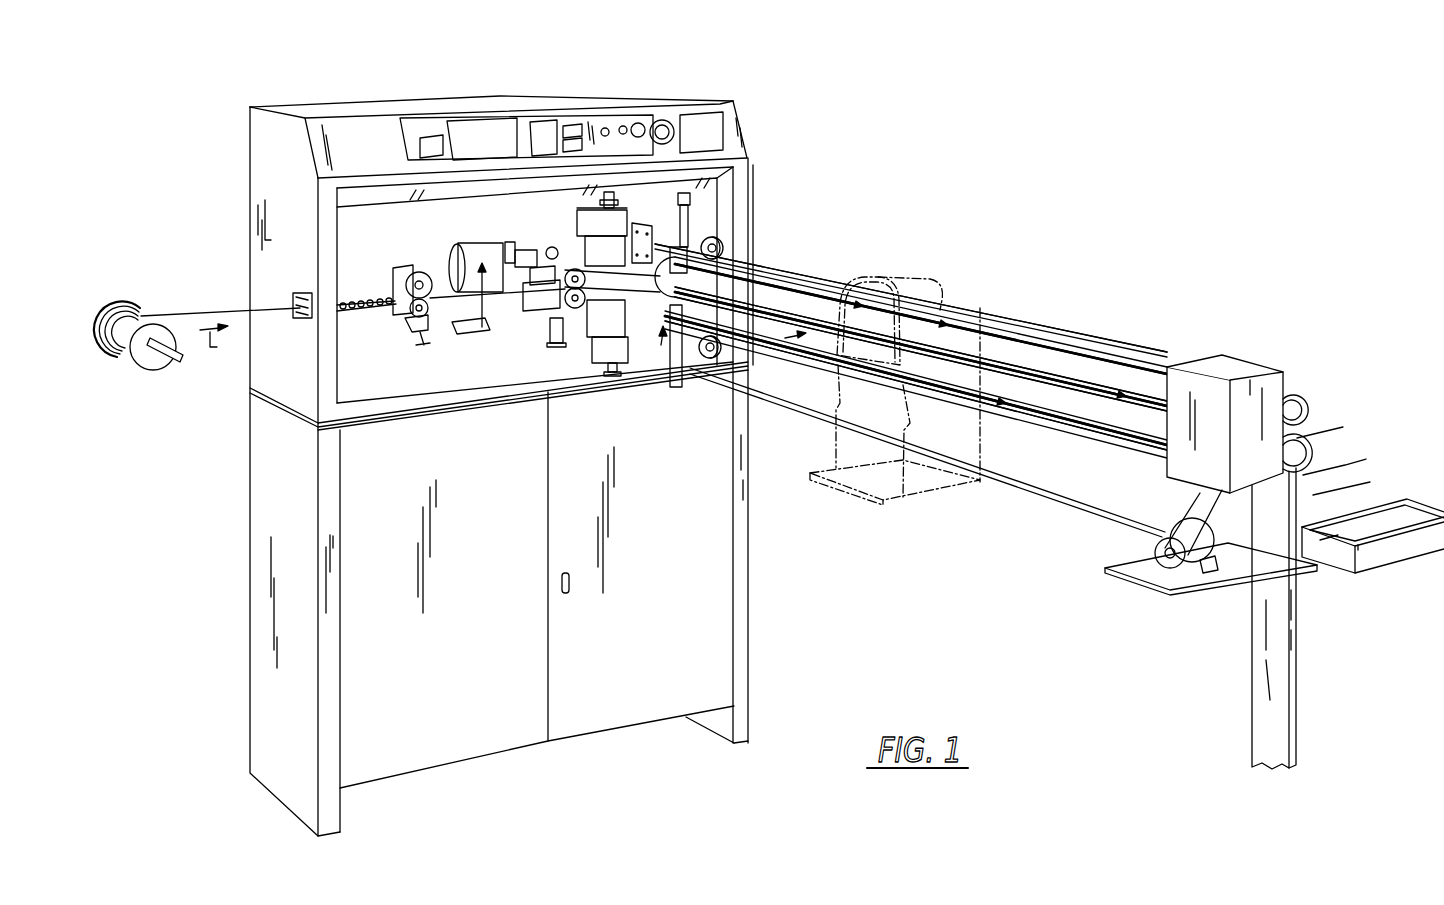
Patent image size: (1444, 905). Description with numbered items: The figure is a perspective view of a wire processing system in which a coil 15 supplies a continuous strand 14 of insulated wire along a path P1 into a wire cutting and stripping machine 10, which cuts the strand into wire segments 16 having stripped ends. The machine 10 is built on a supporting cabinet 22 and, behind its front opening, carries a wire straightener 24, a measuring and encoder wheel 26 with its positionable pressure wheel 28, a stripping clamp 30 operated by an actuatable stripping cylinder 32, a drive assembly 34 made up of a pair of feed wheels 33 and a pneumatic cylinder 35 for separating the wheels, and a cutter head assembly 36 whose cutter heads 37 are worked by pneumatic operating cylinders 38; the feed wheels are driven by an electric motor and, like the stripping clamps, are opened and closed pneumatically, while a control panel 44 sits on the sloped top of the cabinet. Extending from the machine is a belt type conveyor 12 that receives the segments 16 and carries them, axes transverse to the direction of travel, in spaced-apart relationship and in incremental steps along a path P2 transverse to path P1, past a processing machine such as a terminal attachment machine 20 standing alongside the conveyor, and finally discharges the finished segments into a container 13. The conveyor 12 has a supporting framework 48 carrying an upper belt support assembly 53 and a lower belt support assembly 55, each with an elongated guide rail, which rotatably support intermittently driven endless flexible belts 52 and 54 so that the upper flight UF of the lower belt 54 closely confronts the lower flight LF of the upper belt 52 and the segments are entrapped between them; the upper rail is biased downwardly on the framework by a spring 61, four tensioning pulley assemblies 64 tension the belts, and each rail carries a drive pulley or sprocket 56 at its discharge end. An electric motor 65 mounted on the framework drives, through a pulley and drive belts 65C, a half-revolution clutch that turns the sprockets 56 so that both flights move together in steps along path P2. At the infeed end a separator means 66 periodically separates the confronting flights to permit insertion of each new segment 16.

The wire cutting and stripping machine 10 is at (248, 224).
The belt type conveyor 12 is at (827, 278).
The container 13 is at (1382, 558).
The continuous strand of insulated wire 14 is at (220, 313).
The coil 15 is at (145, 370).
The wire segments 16 is at (762, 310).
The terminal attachment machine 20 is at (956, 294).
The supporting cabinet 22 is at (265, 240).
The wire straightener 24 is at (362, 299).
The measuring and encoder wheel 26 is at (410, 267).
The positionable pressure wheel 28 is at (412, 316).
The stripping clamp 30 is at (537, 315).
The actuatable stripping cylinder 32 is at (478, 245).
The feed wheels 33 is at (607, 313).
The drive assembly 34 is at (568, 262).
The pneumatic cylinder 35 is at (550, 337).
The cutter head assembly 36 is at (605, 330).
The cutter heads 37 is at (580, 262).
The pneumatic operating cylinders 38 is at (612, 352).
The control panel 44 is at (638, 115).
The supporting framework 48 is at (1075, 507).
The upper endless flexible belt 52 is at (1040, 325).
The upper belt support assembly 53 is at (1096, 427).
The lower endless flexible belt 54 is at (1063, 432).
The lower belt support assembly 55 is at (1146, 424).
The drive pulley or sprocket 56 is at (1293, 450).
The spring 61 is at (695, 233).
The tensioning pulley assemblies 64 is at (723, 246).
The electric motor 65 is at (1212, 558).
The drive belts 65C is at (1172, 513).
The separator means 66 is at (661, 345).
The lower flight LF is at (1083, 343).
The upper flight UF is at (1055, 415).
The path P1 is at (218, 341).
The path P2 is at (785, 338).